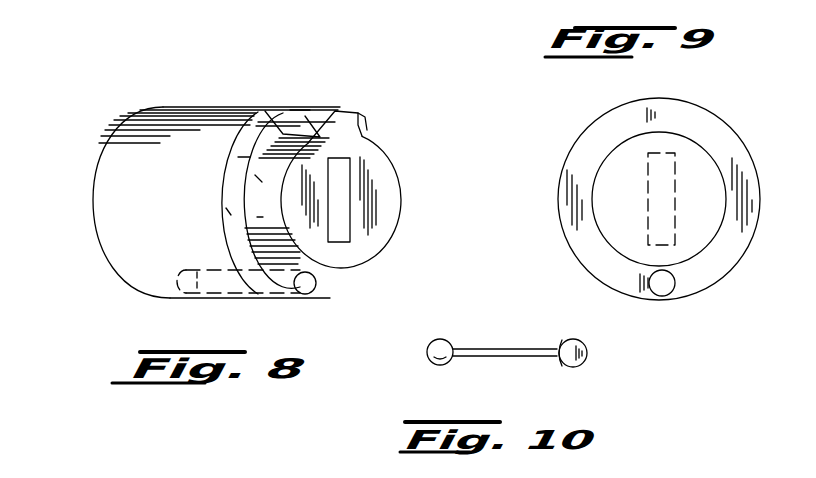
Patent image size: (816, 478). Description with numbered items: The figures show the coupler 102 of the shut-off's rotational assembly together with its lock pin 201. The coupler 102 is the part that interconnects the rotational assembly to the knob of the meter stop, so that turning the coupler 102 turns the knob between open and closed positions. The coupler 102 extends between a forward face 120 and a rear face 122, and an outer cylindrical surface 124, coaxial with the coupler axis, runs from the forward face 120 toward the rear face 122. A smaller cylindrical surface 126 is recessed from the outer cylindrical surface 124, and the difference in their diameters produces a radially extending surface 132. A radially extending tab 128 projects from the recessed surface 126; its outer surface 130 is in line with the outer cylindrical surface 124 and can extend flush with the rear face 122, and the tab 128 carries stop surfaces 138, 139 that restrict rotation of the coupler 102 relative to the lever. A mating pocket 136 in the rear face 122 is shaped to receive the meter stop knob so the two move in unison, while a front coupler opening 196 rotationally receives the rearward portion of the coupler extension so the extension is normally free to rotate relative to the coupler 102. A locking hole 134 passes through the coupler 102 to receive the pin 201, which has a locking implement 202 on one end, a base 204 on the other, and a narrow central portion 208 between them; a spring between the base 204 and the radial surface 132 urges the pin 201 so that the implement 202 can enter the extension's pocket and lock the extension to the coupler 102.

In FIG. 8, the coupler 102 is at (325, 98).
In FIG. 9, the coupler 102 is at (707, 98).
In FIG. 8, the forward face 120 is at (93, 212).
In FIG. 9, the forward face 120 is at (722, 140).
In FIG. 8, the rear face 122 is at (384, 227).
In FIG. 8, the outer cylindrical surface 124 is at (130, 236).
In FIG. 9, the outer cylindrical surface 124 is at (598, 120).
In FIG. 8, the cylindrical surface 126 is at (262, 179).
In FIG. 8, the radially extending tab 128 is at (346, 112).
In FIG. 8, the outer surface 130 is at (299, 109).
In FIG. 8, the radially extending surface 132 is at (230, 214).
In FIG. 8, the locking hole 134 is at (200, 297).
In FIG. 9, the locking hole 134 is at (668, 290).
In FIG. 8, the mating pocket 136 is at (345, 188).
In FIG. 9, the mating pocket 136 is at (676, 195).
In FIG. 8, the stop surface 138 is at (287, 126).
In FIG. 8, the stop surface 139 is at (364, 120).
In FIG. 9, the front coupler opening 196 is at (700, 242).
In FIG. 10, the pin 201 is at (548, 336).
In FIG. 10, the locking implement 202 is at (441, 340).
In FIG. 10, the base 204 is at (590, 352).
In FIG. 10, the narrow central portion 208 is at (497, 358).